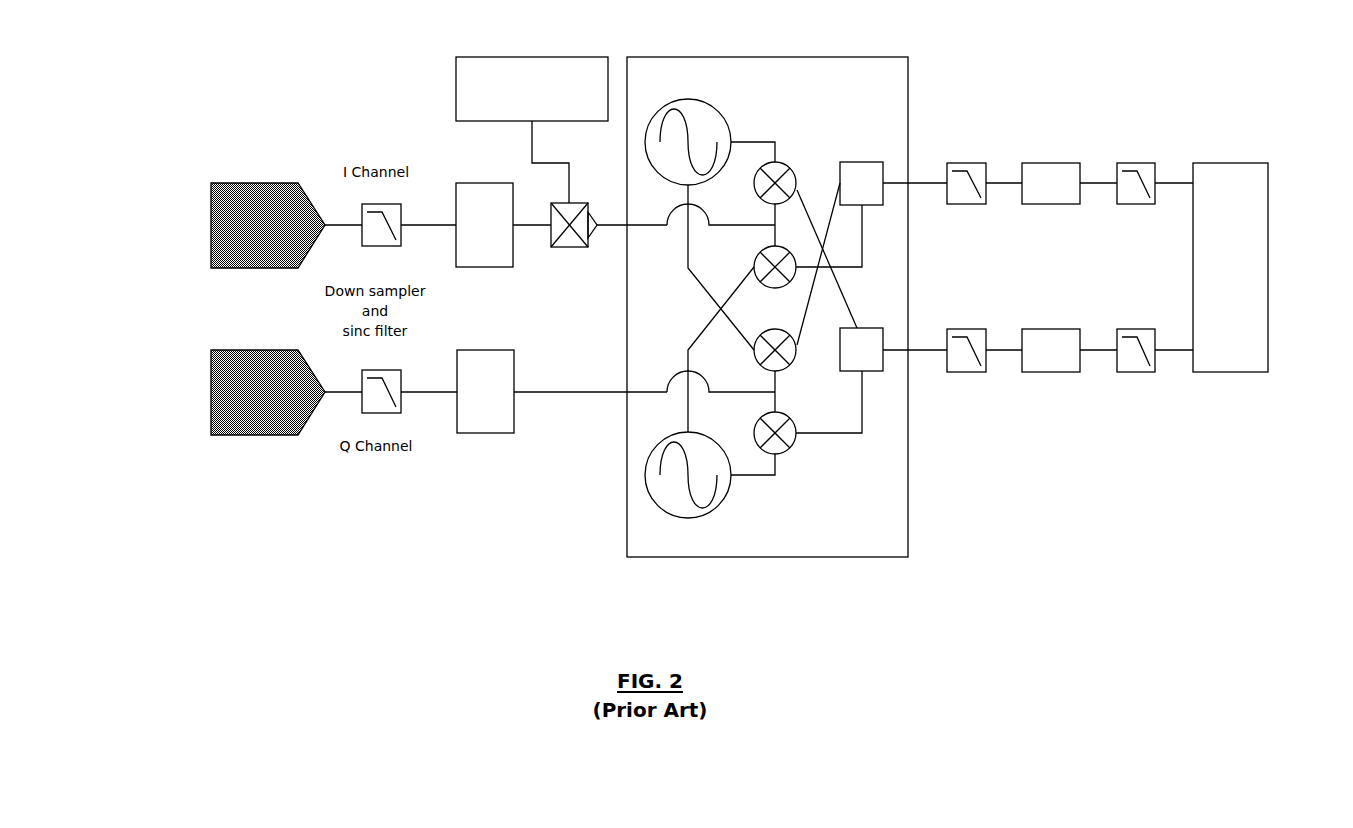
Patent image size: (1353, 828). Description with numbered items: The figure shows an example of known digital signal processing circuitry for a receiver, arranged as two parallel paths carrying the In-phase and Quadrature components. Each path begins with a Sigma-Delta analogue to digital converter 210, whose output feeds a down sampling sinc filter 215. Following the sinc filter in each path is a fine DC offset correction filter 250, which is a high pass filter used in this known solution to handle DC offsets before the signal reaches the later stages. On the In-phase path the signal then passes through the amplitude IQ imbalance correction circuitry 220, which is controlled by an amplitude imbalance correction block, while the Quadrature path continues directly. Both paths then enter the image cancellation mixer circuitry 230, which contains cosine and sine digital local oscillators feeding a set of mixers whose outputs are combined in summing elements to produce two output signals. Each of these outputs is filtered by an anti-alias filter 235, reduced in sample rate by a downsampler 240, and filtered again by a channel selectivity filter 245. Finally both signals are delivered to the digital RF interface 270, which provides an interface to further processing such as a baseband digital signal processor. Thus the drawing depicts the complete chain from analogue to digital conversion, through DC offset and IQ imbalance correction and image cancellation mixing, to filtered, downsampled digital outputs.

The Sigma-Delta analogue to digital converter 210 is at (252, 268).
The down sampling sinc filter 215 is at (407, 248).
The amplitude IQ imbalance correction circuitry 220 is at (587, 190).
The image cancellation mixer circuitry 230 is at (912, 99).
The anti-alias filter 235 is at (983, 149).
The downsampler 240 is at (1060, 149).
The channel selectivity filter 245 is at (1137, 149).
The fine DC offset correction filter 250 is at (520, 257).
The digital RF interface 270 is at (1234, 160).